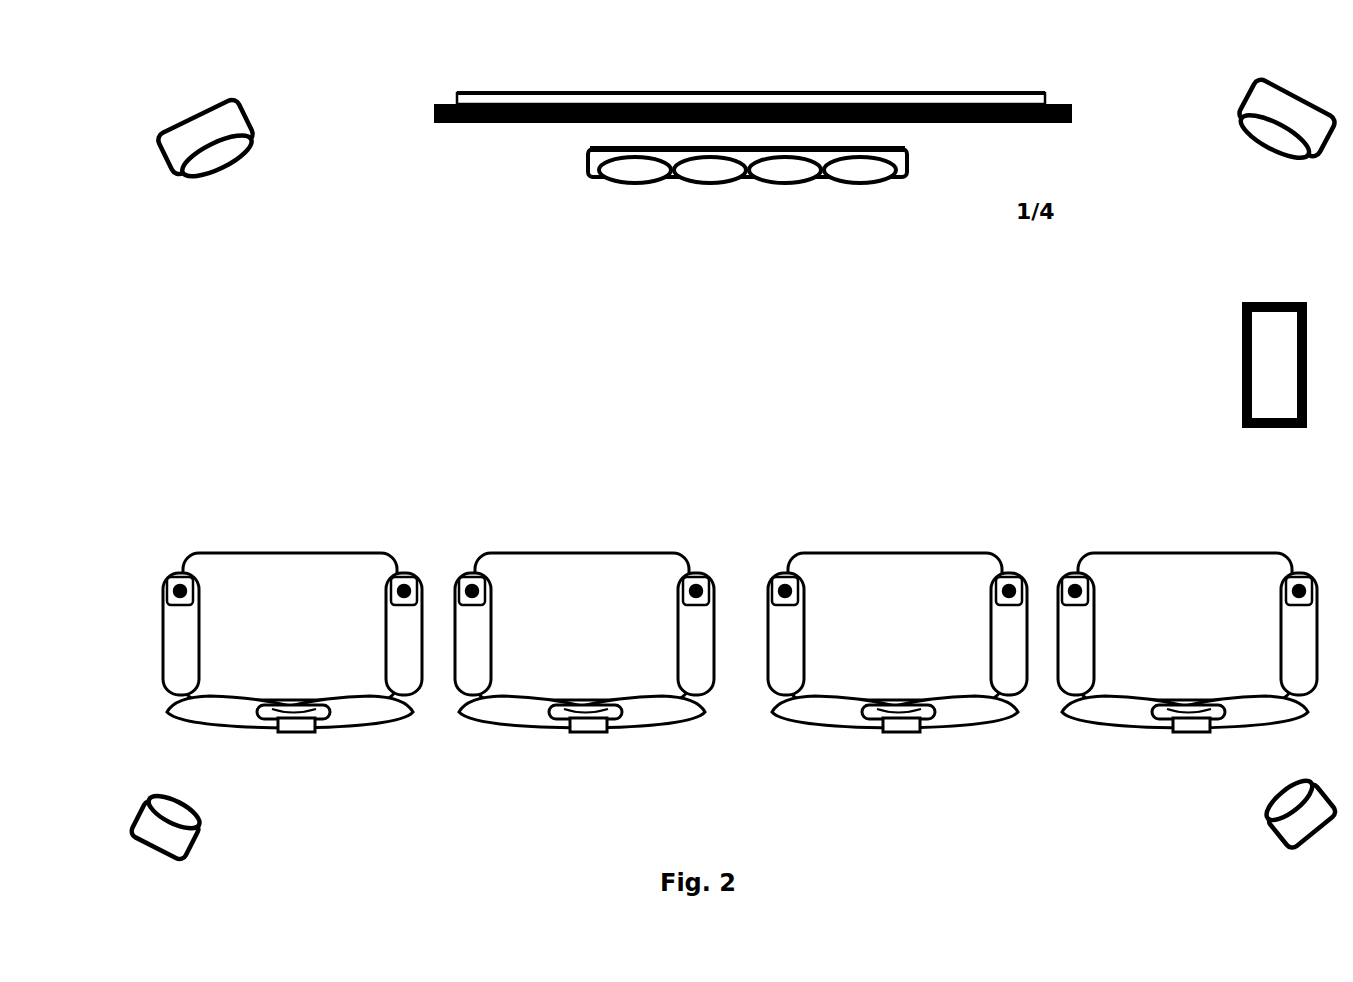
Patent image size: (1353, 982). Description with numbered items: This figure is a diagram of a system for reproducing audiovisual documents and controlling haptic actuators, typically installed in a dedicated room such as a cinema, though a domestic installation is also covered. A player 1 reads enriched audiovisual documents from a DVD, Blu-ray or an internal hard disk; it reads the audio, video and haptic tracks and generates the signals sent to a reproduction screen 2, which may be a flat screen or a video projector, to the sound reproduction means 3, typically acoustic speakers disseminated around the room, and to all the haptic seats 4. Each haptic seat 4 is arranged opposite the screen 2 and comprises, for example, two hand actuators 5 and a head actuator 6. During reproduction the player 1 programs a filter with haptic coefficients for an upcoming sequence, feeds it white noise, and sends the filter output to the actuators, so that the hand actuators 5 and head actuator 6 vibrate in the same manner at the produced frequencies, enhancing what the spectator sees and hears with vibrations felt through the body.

The player 1 is at (1220, 348).
The reproduction screen 2 is at (447, 136).
The sound reproduction means 3 is at (230, 181).
The haptic seat 4 is at (695, 544).
The hand actuator 5 is at (672, 569).
The head actuator 6 is at (619, 732).